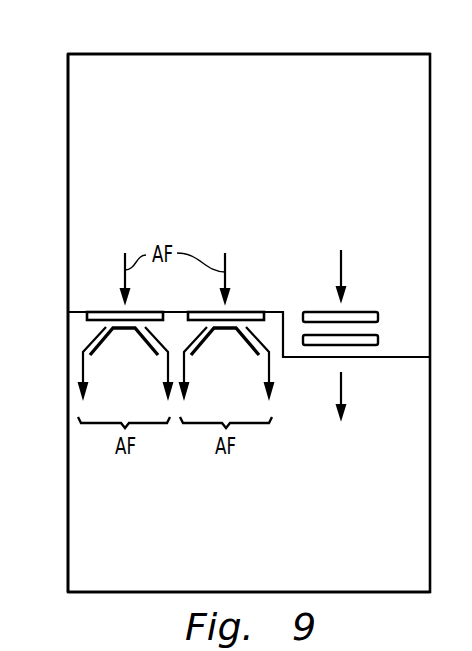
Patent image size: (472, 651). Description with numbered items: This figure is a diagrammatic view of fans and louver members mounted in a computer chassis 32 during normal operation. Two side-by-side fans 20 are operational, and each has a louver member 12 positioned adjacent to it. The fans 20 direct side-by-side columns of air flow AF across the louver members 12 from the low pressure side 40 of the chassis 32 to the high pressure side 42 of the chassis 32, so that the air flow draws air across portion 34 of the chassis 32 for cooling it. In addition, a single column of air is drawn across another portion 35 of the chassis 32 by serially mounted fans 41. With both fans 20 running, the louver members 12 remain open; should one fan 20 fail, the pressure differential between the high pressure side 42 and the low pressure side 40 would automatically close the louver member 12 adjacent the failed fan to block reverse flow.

The louver member 12 is at (104, 343).
The fan 20 is at (105, 312).
The chassis 32 is at (248, 54).
The portion of chassis 34 is at (140, 200).
The portion of chassis 35 is at (383, 72).
The low pressure side 40 is at (83, 142).
The serially mounted fan 41 is at (365, 312).
The high pressure side 42 is at (83, 507).